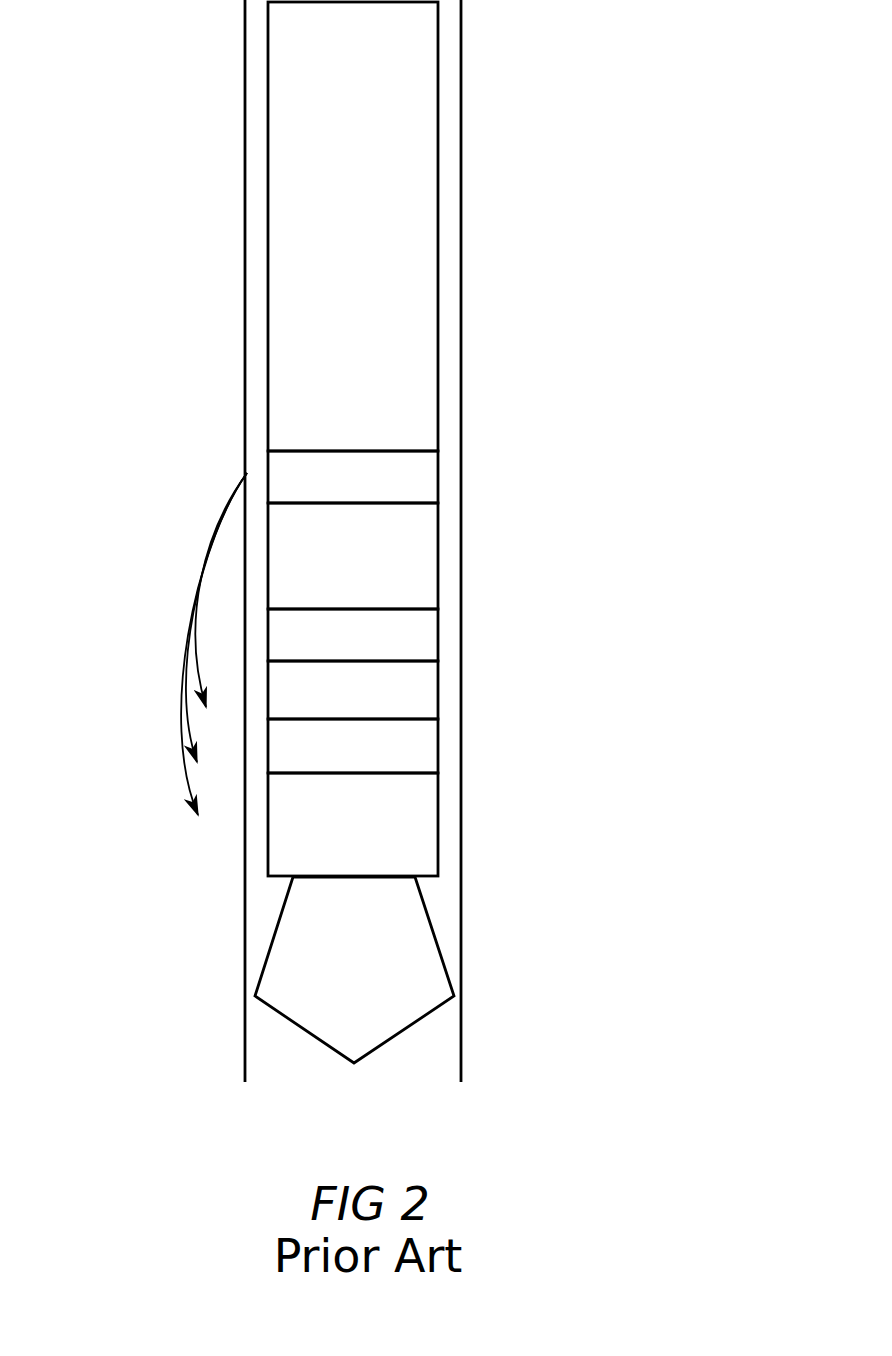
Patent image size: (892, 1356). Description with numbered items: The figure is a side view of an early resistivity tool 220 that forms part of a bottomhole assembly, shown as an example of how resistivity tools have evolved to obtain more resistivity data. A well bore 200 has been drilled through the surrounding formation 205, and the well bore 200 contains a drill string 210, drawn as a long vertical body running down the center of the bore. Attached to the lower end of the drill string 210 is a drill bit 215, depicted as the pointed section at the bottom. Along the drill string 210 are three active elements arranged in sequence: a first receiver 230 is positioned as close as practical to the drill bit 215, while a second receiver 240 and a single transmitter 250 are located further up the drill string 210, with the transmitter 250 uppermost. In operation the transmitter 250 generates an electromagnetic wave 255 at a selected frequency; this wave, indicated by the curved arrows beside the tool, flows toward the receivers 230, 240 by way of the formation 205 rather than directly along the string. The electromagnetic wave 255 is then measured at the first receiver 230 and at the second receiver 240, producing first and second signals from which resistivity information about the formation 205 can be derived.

The well bore 200 is at (463, 677).
The formation 205 is at (72, 673).
The drill string 210 is at (376, 242).
The drill bit 215 is at (329, 1014).
The resistivity tool 220 is at (642, 809).
The first receiver 230 is at (353, 746).
The second receiver 240 is at (353, 635).
The transmitter 250 is at (353, 477).
The electromagnetic wave 255 is at (205, 557).